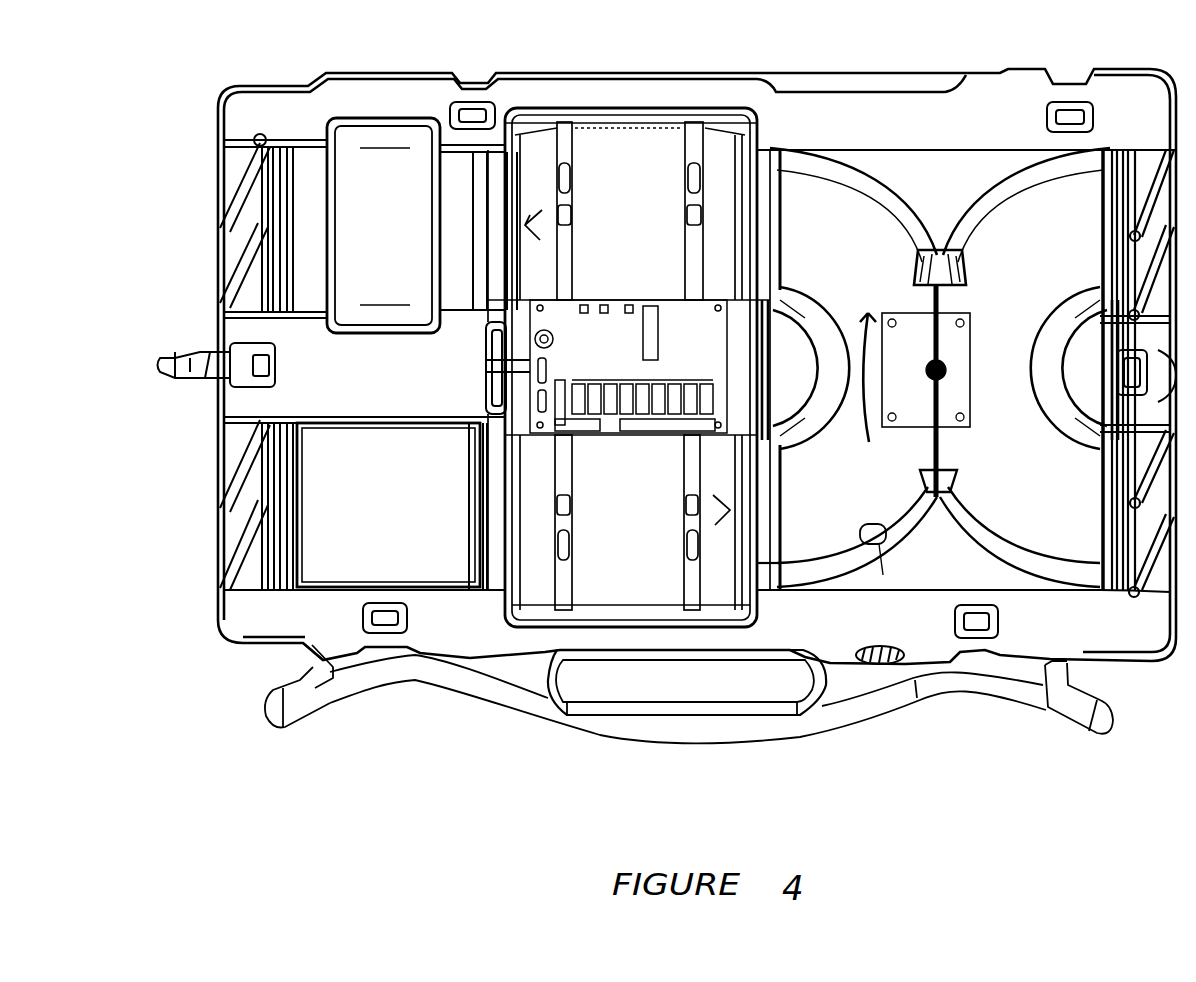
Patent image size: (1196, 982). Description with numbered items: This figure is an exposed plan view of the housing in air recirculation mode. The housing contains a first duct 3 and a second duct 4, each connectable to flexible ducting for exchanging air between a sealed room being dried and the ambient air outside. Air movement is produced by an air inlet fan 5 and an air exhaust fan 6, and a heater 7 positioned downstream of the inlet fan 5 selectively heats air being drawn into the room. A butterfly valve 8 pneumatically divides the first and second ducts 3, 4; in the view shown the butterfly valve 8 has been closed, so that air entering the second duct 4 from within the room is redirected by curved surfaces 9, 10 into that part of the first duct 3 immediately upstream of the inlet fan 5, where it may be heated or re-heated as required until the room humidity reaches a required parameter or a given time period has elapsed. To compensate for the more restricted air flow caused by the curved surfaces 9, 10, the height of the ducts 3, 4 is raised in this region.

The first duct 3 is at (868, 240).
The second duct 4 is at (388, 510).
The air inlet fan 5 is at (612, 128).
The air exhaust fan 6 is at (597, 606).
The heater 7 is at (367, 121).
The butterfly valve 8 is at (940, 448).
The curved surface 9 is at (883, 575).
The curved surface 10 is at (885, 200).